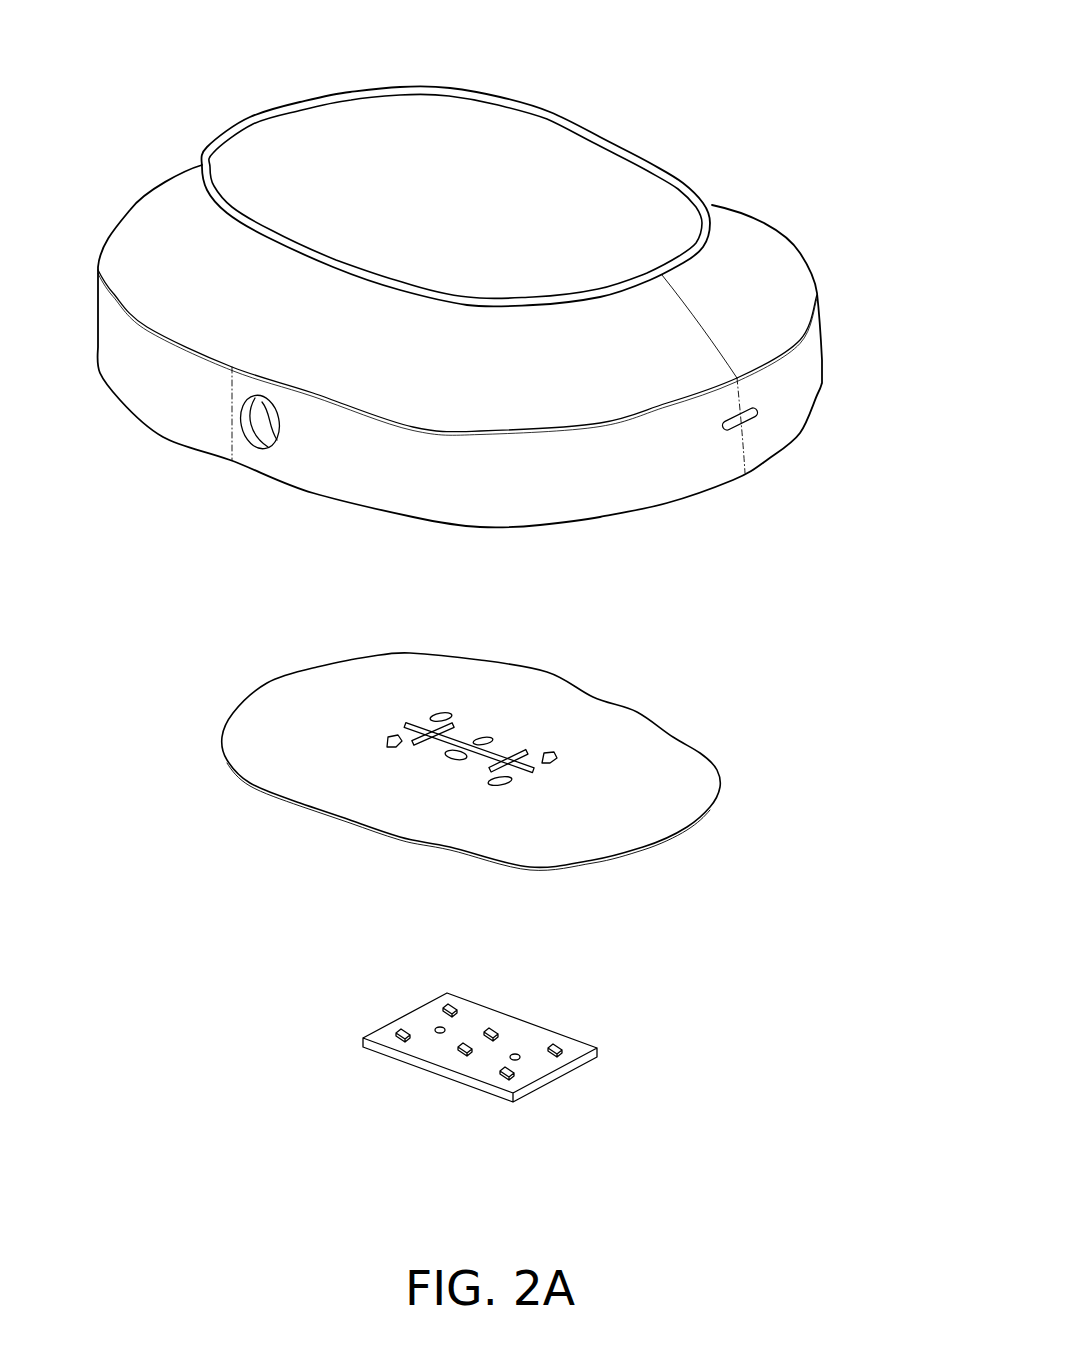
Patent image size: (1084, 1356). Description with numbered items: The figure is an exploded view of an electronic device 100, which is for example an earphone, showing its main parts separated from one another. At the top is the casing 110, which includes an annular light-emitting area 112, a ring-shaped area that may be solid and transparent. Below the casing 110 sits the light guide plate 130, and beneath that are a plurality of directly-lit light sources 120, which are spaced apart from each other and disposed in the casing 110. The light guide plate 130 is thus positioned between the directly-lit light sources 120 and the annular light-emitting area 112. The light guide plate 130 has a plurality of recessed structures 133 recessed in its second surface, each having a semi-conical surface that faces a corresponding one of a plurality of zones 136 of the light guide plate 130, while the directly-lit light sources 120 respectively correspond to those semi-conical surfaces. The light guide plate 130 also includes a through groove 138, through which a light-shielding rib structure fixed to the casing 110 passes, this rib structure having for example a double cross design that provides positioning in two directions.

The electronic device 100 is at (787, 75).
The casing 110 is at (757, 263).
The annular light-emitting area 112 is at (693, 187).
The directly-lit light sources 120 is at (556, 1047).
The light guide plate 130 is at (637, 710).
The recessed structures 133 is at (485, 735).
The zones 136 is at (287, 707).
The through groove 138 is at (508, 757).